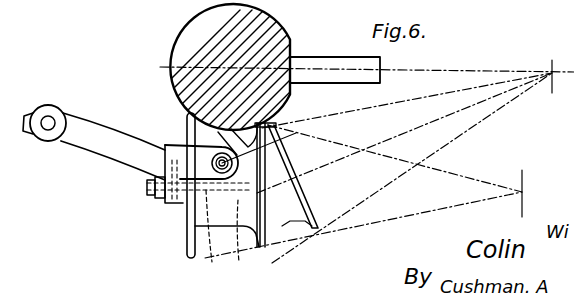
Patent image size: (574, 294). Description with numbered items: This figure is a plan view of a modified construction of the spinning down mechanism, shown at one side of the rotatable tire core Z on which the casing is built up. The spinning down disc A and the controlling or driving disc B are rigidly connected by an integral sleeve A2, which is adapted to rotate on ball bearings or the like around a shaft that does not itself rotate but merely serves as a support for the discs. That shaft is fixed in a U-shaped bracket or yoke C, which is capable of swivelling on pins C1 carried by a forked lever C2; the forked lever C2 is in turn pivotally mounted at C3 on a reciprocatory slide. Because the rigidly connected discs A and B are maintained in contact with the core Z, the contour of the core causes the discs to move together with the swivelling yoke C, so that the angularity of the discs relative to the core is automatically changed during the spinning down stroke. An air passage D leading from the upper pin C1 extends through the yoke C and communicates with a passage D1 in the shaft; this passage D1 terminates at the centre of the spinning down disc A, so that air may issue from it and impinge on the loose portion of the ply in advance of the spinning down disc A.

The rotatable tire core Z is at (262, 38).
The spinning down disc A is at (298, 193).
The integral sleeve A2 is at (190, 238).
The driving disc B is at (257, 193).
The U-shaped bracket or yoke C is at (170, 145).
The pins C1 is at (222, 163).
The forked lever C2 is at (110, 153).
The pivot of forked lever C3 is at (50, 122).
The air passage D is at (140, 185).
The passage in the shaft D1 is at (222, 256).